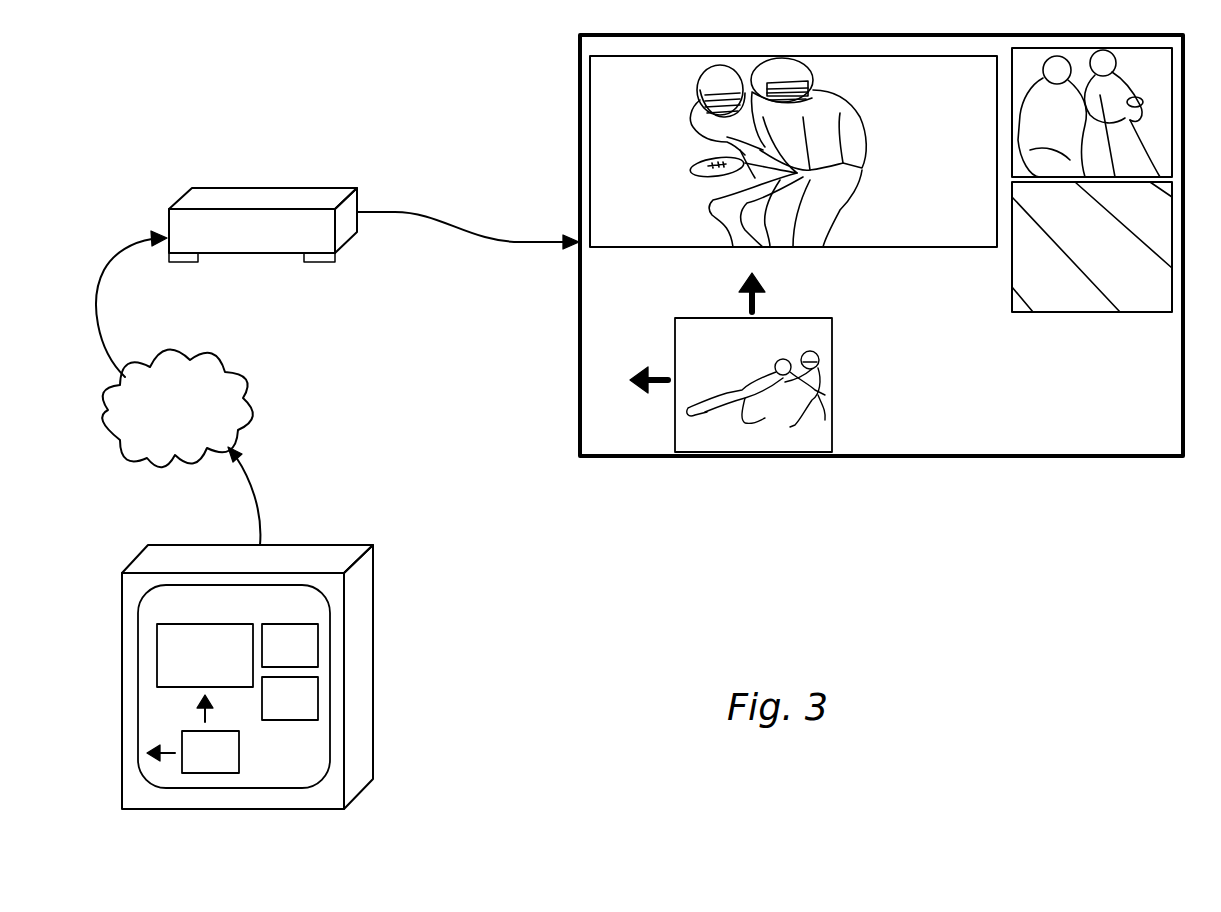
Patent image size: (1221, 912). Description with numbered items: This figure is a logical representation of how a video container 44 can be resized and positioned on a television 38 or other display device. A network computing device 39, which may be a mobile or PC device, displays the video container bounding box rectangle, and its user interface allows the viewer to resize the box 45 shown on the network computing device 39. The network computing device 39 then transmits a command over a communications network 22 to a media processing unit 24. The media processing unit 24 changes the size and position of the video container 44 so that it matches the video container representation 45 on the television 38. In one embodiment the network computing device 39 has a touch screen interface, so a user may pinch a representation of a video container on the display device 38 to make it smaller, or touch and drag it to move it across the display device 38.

The communications network 22 is at (177, 409).
The media processing unit 24 is at (247, 188).
The television 38 is at (881, 285).
The network computing device 39 is at (230, 697).
The video container 44 is at (732, 437).
The video container representation 45 is at (283, 754).